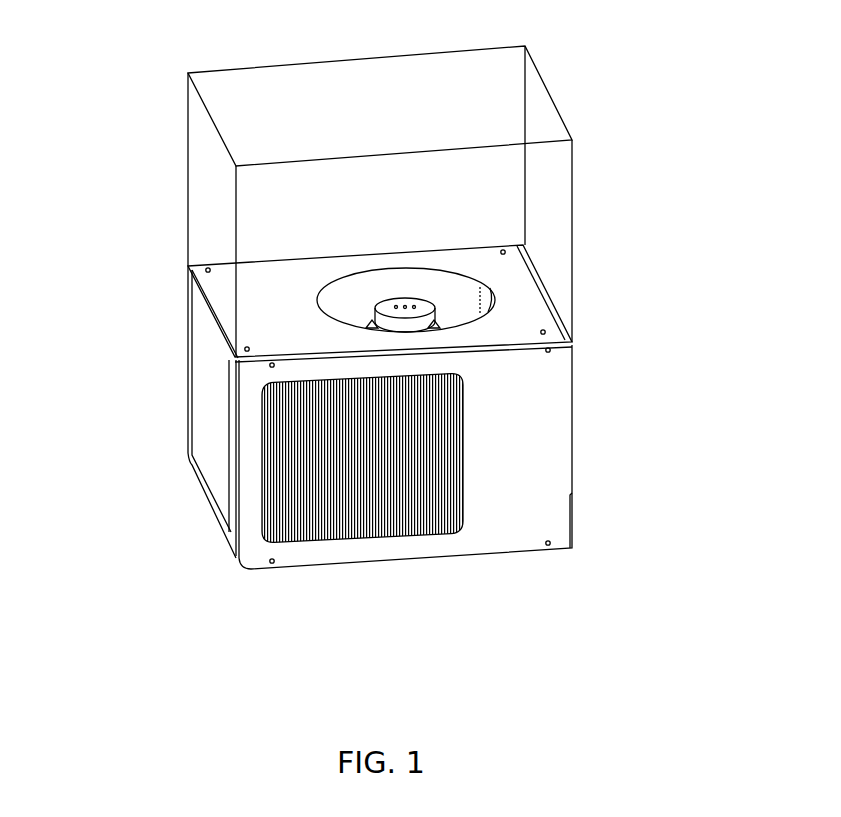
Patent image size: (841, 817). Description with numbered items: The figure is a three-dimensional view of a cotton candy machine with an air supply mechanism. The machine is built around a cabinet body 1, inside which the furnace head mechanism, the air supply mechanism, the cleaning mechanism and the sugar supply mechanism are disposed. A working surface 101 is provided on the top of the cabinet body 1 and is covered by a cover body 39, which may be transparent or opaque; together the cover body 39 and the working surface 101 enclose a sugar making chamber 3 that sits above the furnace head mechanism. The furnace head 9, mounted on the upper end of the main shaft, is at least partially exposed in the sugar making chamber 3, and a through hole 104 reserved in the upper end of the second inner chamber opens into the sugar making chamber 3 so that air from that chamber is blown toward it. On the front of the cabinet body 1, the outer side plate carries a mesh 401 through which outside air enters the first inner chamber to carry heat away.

The cabinet body 1 is at (212, 417).
The working surface 101 is at (222, 293).
The through hole 104 is at (383, 282).
The sugar making chamber 3 is at (495, 203).
The cover body 39 is at (350, 58).
The furnace head 9 is at (440, 320).
The mesh 401 is at (447, 535).